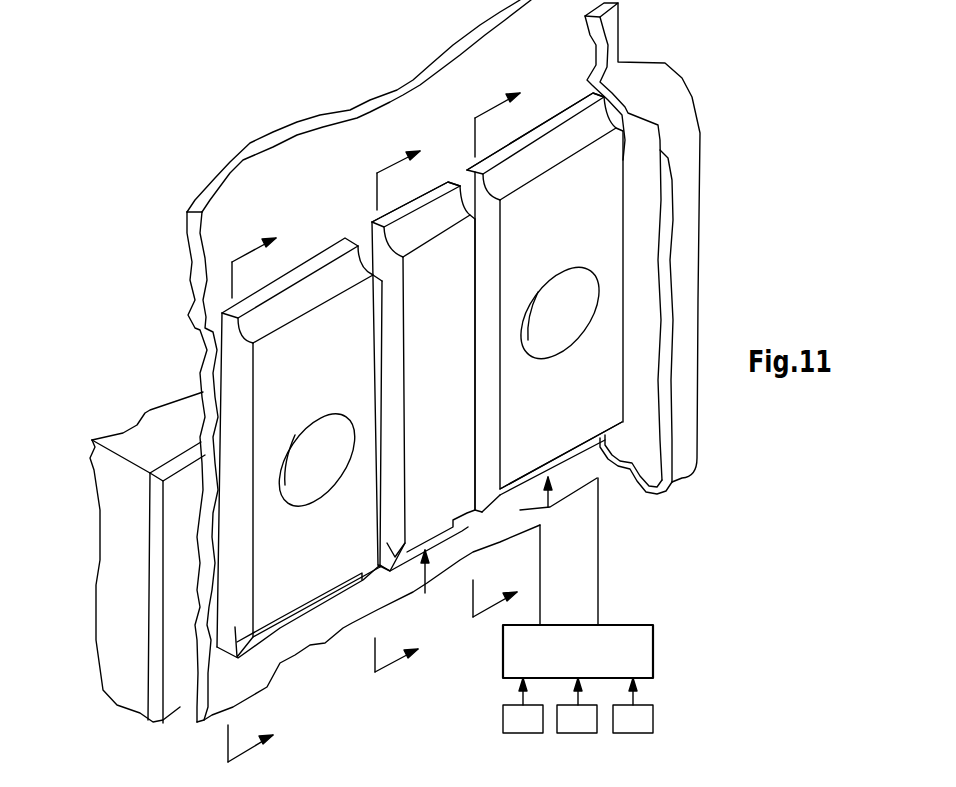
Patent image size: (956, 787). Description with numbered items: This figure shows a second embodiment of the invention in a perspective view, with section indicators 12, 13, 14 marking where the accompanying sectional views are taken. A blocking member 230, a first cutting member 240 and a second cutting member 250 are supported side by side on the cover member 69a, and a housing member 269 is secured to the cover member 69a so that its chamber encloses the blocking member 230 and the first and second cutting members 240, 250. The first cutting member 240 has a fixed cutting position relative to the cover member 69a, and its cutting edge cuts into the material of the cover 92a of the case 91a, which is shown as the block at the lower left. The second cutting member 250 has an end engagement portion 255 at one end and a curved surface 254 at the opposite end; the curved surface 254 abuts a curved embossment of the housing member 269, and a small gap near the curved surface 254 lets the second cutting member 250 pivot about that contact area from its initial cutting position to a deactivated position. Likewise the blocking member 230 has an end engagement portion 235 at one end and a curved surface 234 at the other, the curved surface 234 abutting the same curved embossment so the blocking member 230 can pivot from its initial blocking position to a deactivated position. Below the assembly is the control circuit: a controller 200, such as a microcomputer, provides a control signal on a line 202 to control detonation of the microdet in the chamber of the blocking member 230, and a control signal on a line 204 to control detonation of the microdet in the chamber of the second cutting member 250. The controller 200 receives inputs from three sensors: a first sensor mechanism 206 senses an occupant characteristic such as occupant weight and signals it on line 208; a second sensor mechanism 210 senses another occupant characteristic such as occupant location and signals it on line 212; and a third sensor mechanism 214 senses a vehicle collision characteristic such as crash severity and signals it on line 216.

The cover member 69a is at (328, 142).
The case 91a is at (115, 470).
The cover 92a is at (153, 548).
The section line 12 is at (258, 482).
The section line 13 is at (397, 400).
The section line 14 is at (496, 343).
The blocking member 230 is at (432, 280).
The curved surface 234 is at (435, 217).
The end engagement portion 235 is at (383, 550).
The first cutting member 240 is at (265, 427).
The second cutting member 250 is at (547, 213).
The curved surface 254 is at (592, 130).
The end engagement portion 255 is at (477, 480).
The housing member 269 is at (685, 117).
The controller 200 is at (657, 650).
The line 202 is at (541, 558).
The line 204 is at (600, 550).
The first sensor mechanism 206 is at (522, 733).
The line 208 is at (522, 695).
The second sensor mechanism 210 is at (585, 733).
The line 212 is at (583, 697).
The third sensor mechanism 214 is at (653, 717).
The line 216 is at (633, 695).